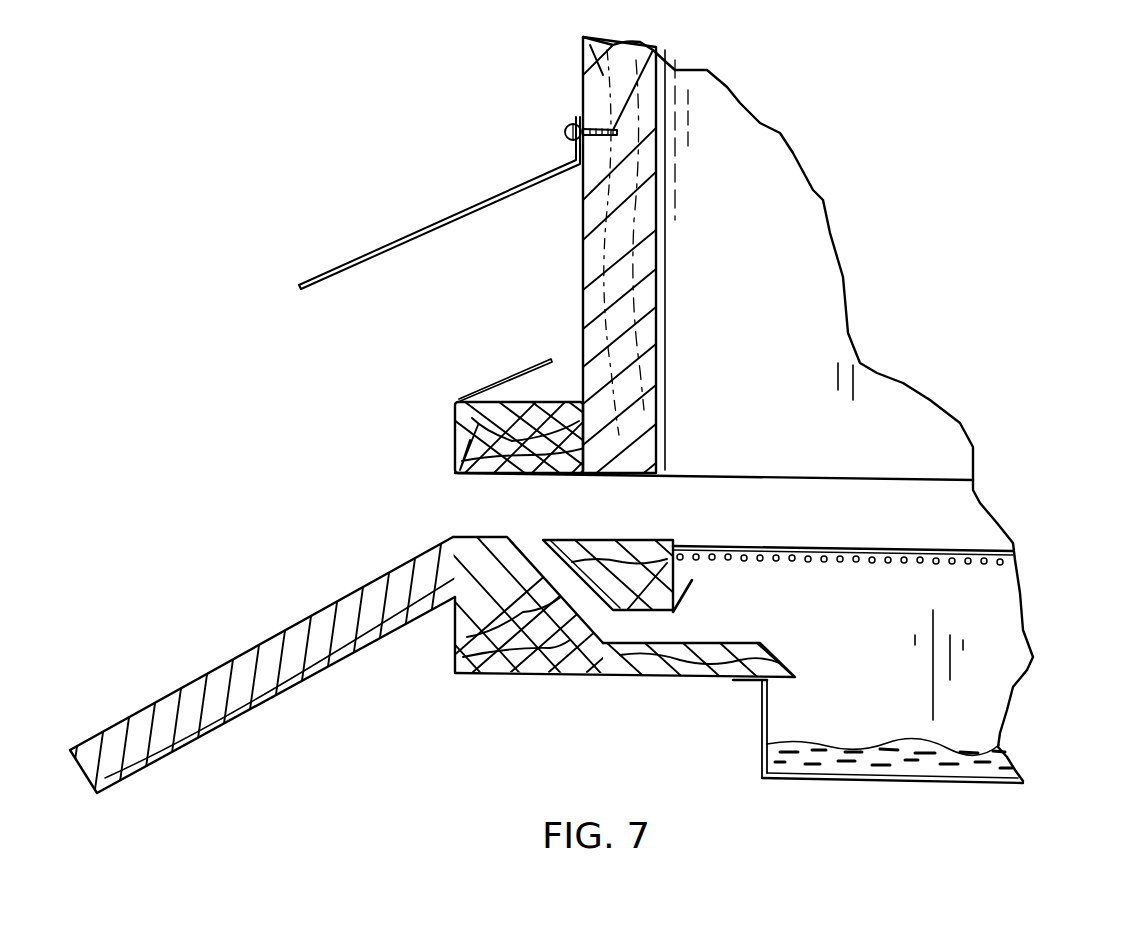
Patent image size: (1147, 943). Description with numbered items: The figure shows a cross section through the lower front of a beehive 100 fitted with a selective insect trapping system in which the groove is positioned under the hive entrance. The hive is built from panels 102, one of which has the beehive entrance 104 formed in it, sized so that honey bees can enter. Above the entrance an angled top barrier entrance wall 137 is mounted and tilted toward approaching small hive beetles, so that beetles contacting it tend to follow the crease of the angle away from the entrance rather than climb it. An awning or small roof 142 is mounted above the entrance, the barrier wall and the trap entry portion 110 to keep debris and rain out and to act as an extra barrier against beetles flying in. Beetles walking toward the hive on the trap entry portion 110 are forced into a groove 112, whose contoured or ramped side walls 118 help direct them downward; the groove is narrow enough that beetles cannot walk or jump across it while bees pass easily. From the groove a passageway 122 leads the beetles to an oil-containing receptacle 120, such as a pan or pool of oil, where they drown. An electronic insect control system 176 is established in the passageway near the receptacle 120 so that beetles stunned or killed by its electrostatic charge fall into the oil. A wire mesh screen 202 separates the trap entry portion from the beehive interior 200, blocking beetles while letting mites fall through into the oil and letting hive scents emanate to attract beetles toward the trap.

The beehive 100 is at (358, 125).
The beehive interior 200 is at (763, 153).
The panels 102 is at (583, 94).
The awning or small roof 142 is at (402, 238).
The angled top barrier entrance wall 137 is at (503, 375).
The beehive entrance 104 is at (447, 502).
The side walls of groove 118 is at (608, 548).
The trap entry portion 110 is at (455, 600).
The groove 112 is at (573, 590).
The passageway 122 is at (688, 630).
The electronic insect control system 176 is at (732, 678).
The receptacle 120 is at (832, 750).
The screen 202 is at (942, 560).